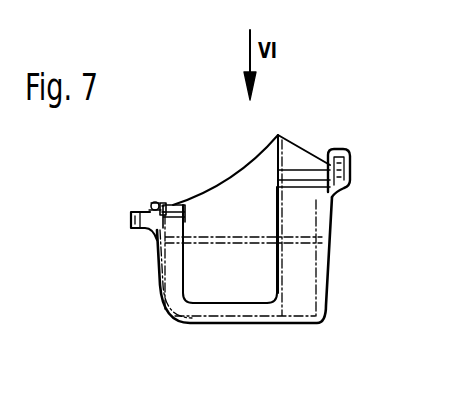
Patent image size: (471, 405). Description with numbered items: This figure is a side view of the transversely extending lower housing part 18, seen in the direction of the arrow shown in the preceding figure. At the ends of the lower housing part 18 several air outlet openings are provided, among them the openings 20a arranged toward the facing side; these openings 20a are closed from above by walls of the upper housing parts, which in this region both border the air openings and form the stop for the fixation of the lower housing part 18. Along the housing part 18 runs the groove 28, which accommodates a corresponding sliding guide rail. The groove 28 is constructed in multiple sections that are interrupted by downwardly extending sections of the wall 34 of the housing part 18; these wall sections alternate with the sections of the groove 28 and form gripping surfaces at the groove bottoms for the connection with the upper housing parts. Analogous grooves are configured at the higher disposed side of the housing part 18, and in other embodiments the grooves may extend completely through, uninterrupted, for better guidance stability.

The lower housing part 18 is at (312, 280).
The outlet openings toward the facing side 20a is at (228, 290).
The groove 28 is at (147, 228).
The wall 34 is at (163, 210).